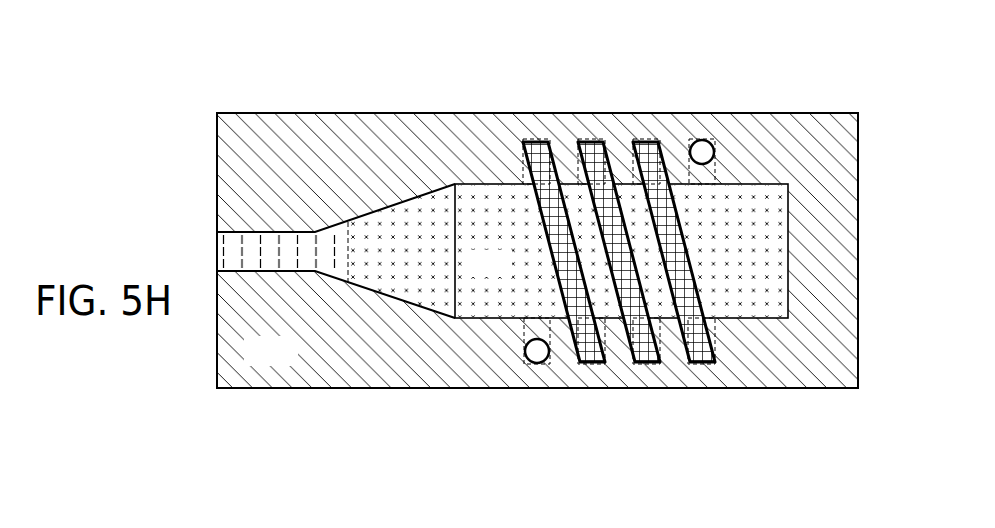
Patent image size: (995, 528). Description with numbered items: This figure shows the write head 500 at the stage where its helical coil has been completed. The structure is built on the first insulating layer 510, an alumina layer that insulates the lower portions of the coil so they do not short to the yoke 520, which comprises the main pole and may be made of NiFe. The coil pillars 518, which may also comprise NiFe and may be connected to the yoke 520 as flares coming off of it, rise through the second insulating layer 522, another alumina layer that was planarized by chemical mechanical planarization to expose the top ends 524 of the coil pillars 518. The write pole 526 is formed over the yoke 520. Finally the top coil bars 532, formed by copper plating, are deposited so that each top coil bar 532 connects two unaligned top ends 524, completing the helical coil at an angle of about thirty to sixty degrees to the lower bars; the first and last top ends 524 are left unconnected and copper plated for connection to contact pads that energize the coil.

The write head 500 is at (212, 93).
The first insulating layer 510 is at (292, 362).
The coil pillars 518 is at (710, 140).
The yoke 520 is at (776, 275).
The second insulating layer 522 is at (508, 274).
The top ends of the coil pillars 524 is at (705, 145).
The write pole 526 is at (235, 248).
The top coil bars 532 is at (702, 346).